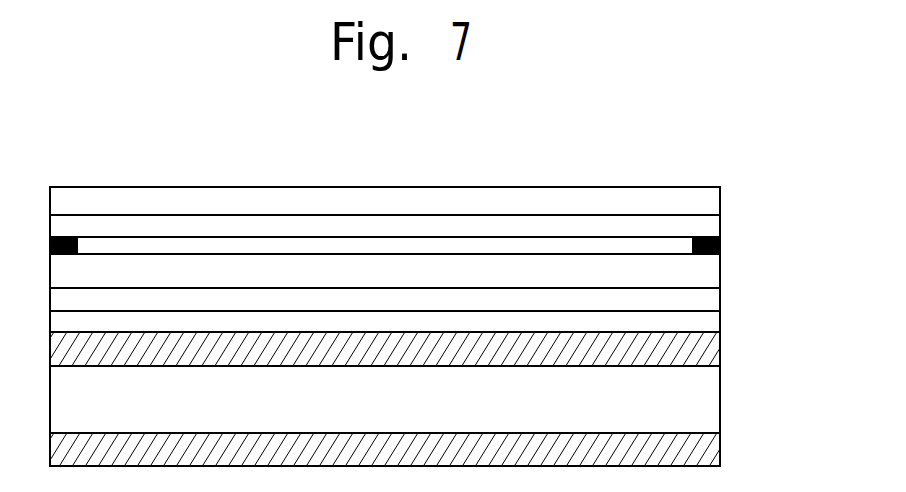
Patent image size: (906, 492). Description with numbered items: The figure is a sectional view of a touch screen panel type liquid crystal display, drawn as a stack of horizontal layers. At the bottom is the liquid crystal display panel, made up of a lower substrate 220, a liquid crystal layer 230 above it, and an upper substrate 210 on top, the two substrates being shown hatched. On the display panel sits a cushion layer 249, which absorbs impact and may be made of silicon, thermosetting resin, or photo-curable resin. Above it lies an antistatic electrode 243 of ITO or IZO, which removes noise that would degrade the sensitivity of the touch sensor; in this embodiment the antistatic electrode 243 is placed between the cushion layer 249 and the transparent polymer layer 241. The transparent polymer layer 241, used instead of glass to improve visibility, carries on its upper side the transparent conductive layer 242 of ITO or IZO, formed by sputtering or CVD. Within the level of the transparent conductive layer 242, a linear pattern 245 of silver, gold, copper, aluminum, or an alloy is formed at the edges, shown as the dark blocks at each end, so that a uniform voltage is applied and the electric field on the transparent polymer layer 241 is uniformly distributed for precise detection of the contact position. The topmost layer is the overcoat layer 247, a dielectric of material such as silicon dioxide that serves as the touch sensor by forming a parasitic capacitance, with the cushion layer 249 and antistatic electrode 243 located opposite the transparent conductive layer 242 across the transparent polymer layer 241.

The overcoat layer 247 is at (713, 201).
The transparent conductive layer 242 is at (713, 225).
The linear pattern 245 is at (720, 244).
The transparent polymer layer 241 is at (715, 269).
The antistatic electrode 243 is at (715, 298).
The cushion layer 249 is at (715, 320).
The upper substrate 210 is at (715, 352).
The liquid crystal layer 230 is at (715, 400).
The lower substrate 220 is at (713, 453).